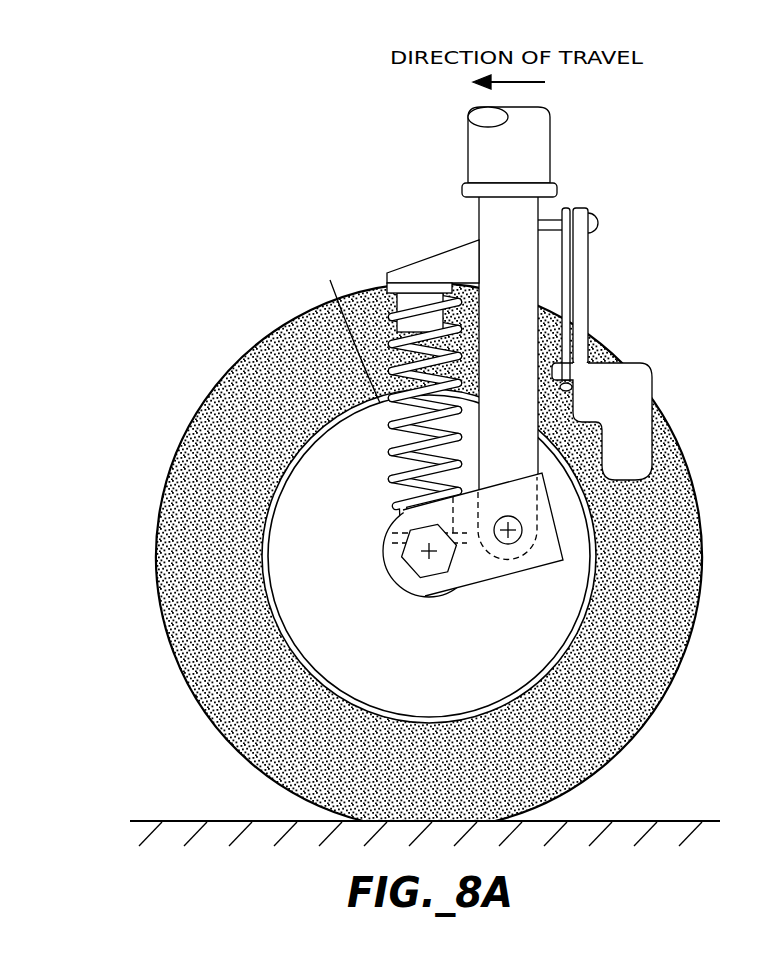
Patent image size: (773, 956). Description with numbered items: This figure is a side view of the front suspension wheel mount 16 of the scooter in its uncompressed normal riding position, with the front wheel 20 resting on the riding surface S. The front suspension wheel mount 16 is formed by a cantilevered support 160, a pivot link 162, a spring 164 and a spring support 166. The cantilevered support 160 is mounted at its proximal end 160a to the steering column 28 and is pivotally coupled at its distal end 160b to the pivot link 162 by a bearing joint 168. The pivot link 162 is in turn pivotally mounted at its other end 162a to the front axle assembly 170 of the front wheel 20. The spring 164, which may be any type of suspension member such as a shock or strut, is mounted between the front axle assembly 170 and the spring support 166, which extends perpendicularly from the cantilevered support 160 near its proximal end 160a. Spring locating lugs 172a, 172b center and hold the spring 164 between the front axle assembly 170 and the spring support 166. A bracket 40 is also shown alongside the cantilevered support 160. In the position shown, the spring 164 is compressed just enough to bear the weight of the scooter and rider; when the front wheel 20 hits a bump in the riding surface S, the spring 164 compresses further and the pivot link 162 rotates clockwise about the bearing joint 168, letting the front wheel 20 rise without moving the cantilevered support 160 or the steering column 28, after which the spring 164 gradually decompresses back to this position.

The front suspension wheel mount 16 is at (357, 428).
The front wheel 20 is at (227, 418).
The steering column 28 is at (537, 155).
The mounting bracket 40 is at (627, 377).
The cantilevered support 160 is at (528, 371).
The proximal end 160a is at (530, 207).
The distal end 160b is at (537, 528).
The pivot link 162 is at (477, 573).
The other end of pivot link 162a is at (405, 585).
The spring 164 is at (374, 398).
The spring support 166 is at (445, 263).
The bearing joint 168 is at (508, 530).
The front axle assembly 170 is at (426, 553).
The spring locating lug 172a is at (391, 524).
The spring locating lug 172b is at (409, 289).
The riding surface S is at (640, 820).